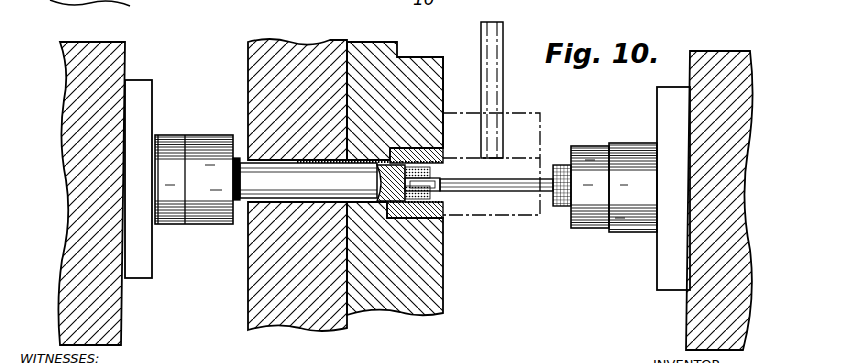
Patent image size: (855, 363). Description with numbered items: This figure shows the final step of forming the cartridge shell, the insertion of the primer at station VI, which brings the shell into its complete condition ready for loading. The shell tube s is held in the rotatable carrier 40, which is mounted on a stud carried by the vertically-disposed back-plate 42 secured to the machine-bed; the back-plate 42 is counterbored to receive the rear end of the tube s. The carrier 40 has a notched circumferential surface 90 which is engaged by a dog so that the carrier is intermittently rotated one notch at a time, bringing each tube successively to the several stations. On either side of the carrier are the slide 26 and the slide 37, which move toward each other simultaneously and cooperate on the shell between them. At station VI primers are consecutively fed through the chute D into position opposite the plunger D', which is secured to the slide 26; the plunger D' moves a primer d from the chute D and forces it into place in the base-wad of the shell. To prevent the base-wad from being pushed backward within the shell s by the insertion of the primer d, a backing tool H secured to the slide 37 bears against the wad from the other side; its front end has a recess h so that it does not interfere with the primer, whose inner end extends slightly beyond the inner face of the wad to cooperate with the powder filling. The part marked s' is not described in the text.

The slide 37 is at (118, 58).
The back-plate 42 is at (248, 58).
The notched circumferential surface 90 is at (371, 42).
The carrier 40 is at (413, 58).
The backing tool H is at (262, 180).
The recess h is at (400, 203).
The shell tube s is at (365, 265).
The bushing s' is at (415, 255).
The primer d is at (443, 232).
The chute D is at (474, 88).
The plunger D' is at (479, 229).
The slide 26 is at (723, 63).
The station VI is at (154, 194).